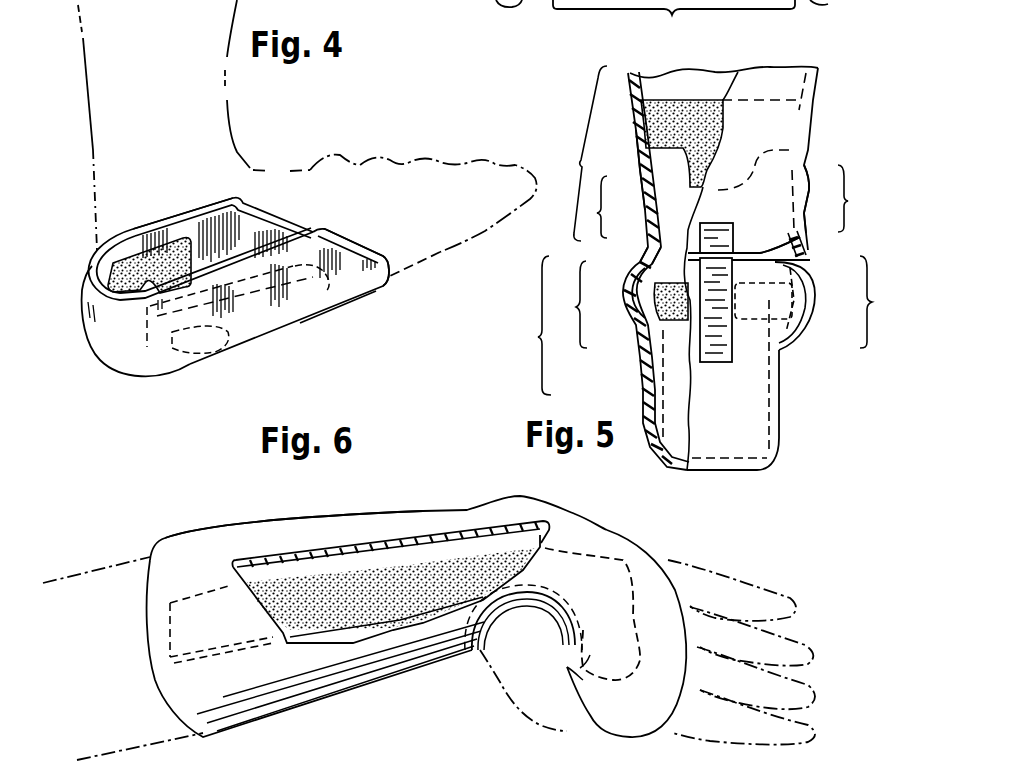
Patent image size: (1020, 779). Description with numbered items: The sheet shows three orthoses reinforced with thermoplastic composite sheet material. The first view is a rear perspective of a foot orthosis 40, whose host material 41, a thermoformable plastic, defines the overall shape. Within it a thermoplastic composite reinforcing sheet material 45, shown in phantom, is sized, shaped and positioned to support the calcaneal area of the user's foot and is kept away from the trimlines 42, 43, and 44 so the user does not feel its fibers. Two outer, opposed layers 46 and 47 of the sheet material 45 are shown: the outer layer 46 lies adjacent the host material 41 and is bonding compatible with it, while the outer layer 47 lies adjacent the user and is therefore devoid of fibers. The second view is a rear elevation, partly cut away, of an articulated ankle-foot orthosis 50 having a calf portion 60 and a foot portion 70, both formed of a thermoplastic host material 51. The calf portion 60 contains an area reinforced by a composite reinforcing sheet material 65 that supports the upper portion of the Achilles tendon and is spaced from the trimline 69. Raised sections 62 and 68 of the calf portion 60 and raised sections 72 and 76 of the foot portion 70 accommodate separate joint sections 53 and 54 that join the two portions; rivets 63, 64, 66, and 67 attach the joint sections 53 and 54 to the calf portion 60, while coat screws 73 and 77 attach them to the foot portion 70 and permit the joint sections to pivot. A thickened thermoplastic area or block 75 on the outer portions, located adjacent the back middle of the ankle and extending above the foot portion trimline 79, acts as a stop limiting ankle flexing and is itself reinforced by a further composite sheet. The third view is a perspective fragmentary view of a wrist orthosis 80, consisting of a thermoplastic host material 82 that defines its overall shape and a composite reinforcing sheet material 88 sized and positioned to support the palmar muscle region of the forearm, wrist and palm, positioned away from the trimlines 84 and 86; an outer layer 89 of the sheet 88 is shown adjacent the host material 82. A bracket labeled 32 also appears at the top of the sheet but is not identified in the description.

In FIG. 5, the splint assembly 32 is at (674, 23).
In FIG. 4, the foot orthosis 40 is at (84, 312).
In FIG. 4, the host material 41 is at (143, 351).
In FIG. 4, the trimline 42 is at (215, 198).
In FIG. 4, the trimline 43 is at (258, 245).
In FIG. 4, the trimline 44 is at (352, 232).
In FIG. 4, the thermoplastic composite reinforcing sheet material 45 is at (258, 318).
In FIG. 4, the outer layer 46 is at (325, 290).
In FIG. 4, the outer layer 47 is at (147, 250).
In FIG. 5, the articulated ankle-foot orthosis 50 is at (783, 450).
In FIG. 5, the thermoplastic host material 51 is at (778, 160).
In FIG. 5, the joint section 53 is at (640, 260).
In FIG. 5, the joint section 54 is at (814, 244).
In FIG. 5, the calf portion 60 is at (580, 153).
In FIG. 5, the raised section 62 is at (859, 198).
In FIG. 5, the rivet 63 is at (809, 186).
In FIG. 5, the rivet 64 is at (801, 221).
In FIG. 5, the thermoplastic composite reinforcing sheet material 65 is at (697, 118).
In FIG. 5, the rivet 66 is at (638, 170).
In FIG. 5, the rivet 67 is at (641, 225).
In FIG. 5, the raised section 68 is at (591, 207).
In FIG. 5, the trimline 69 is at (774, 232).
In FIG. 5, the foot portion 70 is at (534, 325).
In FIG. 5, the raised section 72 is at (882, 302).
In FIG. 5, the coat screw 73 is at (774, 268).
In FIG. 5, the thickened thermoplastic area or block 75 is at (784, 403).
In FIG. 5, the raised section 76 is at (568, 304).
In FIG. 5, the coat screw 77 is at (628, 286).
In FIG. 5, the foot portion trimline 79 is at (758, 305).
In FIG. 6, the wrist orthosis 80 is at (371, 700).
In FIG. 6, the thermoplastic host material 82 is at (198, 560).
In FIG. 6, the trimline 84 is at (680, 580).
In FIG. 6, the trimline 86 is at (144, 575).
In FIG. 6, the thermoplastic composite reinforcing sheet material 88 is at (315, 590).
In FIG. 6, the outer layer 89 is at (433, 573).